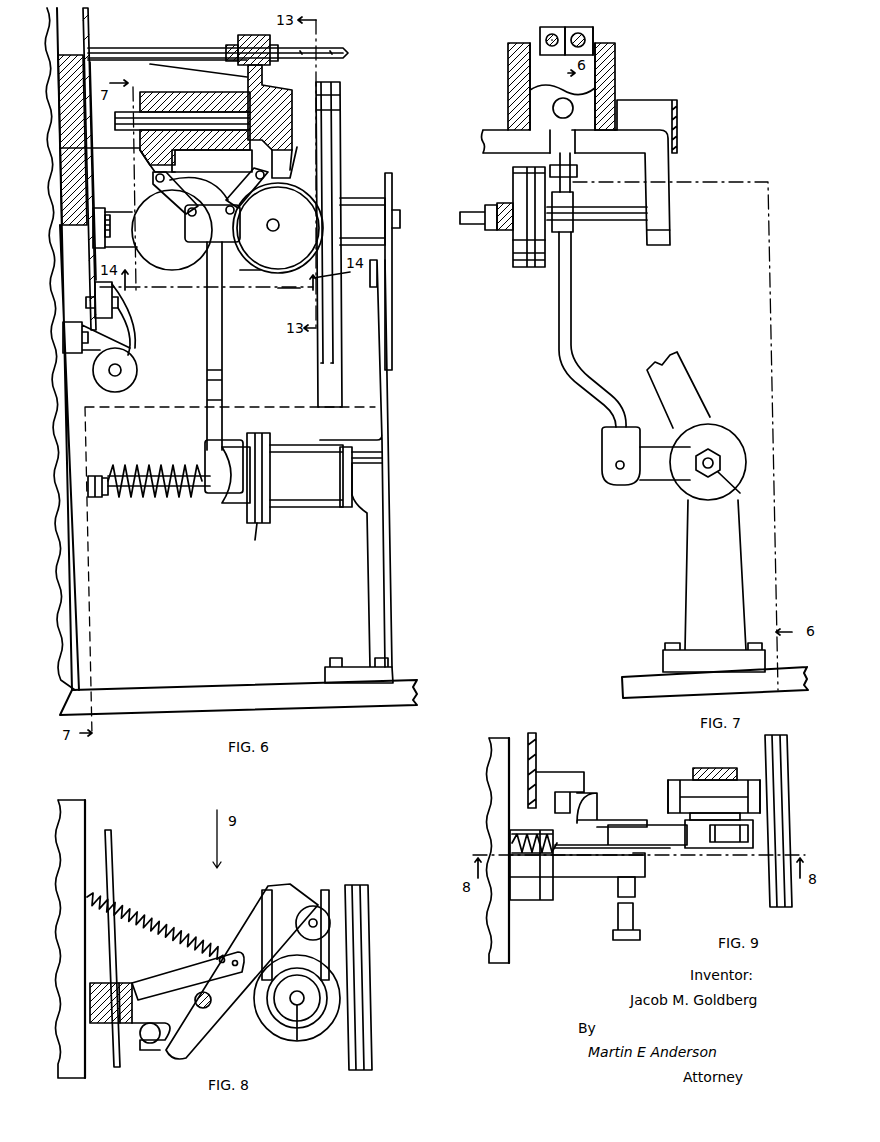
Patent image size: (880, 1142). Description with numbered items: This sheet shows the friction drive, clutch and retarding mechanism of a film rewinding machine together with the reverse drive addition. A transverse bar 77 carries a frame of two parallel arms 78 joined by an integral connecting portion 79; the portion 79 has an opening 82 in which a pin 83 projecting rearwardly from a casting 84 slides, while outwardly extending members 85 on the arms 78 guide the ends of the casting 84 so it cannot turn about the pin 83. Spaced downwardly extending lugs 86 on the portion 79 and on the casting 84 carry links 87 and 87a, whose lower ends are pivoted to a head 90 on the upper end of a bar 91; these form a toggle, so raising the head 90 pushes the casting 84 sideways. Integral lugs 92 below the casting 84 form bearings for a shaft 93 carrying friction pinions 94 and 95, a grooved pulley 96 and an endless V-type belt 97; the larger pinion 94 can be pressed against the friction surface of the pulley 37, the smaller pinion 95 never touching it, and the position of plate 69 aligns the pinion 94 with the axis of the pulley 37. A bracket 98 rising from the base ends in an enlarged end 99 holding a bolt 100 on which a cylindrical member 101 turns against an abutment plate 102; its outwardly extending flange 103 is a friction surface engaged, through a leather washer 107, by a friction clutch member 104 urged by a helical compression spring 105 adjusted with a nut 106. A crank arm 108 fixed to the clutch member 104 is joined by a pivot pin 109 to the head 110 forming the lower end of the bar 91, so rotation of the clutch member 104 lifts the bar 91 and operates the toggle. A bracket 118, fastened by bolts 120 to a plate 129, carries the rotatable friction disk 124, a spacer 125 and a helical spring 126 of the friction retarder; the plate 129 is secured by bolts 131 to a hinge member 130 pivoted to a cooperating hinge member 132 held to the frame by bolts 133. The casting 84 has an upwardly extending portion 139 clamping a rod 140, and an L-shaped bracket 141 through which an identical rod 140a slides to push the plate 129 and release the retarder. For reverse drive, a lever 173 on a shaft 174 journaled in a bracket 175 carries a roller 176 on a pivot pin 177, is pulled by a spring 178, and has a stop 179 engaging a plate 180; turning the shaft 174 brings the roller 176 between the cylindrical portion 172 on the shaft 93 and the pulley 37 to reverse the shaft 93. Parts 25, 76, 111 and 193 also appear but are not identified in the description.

In FIG. 6, the guide rail 25 is at (322, 385).
In FIG. 6, the pulley 37 is at (342, 122).
In FIG. 8, the pulley 37 is at (372, 942).
In FIG. 9, the pulley 37 is at (770, 888).
In FIG. 6, the plate 69 is at (393, 258).
In FIG. 6, the hub nut 76 is at (402, 218).
In FIG. 6, the transverse bar 77 is at (66, 60).
In FIG. 6, the parallel arms 78 is at (195, 92).
In FIG. 7, the parallel arms 78 is at (508, 78).
In FIG. 6, the connecting portion 79 is at (215, 95).
In FIG. 7, the connecting portion 79 is at (556, 88).
In FIG. 6, the opening 82 is at (145, 155).
In FIG. 6, the pin 83 is at (118, 117).
In FIG. 7, the pin 83 is at (573, 105).
In FIG. 6, the casting 84 is at (275, 92).
In FIG. 7, the outwardly extending members 85 is at (580, 126).
In FIG. 6, the downwardly extending lugs 86 is at (172, 165).
In FIG. 6, the link 87 is at (172, 198).
In FIG. 6, the link 87a is at (248, 190).
In FIG. 6, the head 90 is at (212, 223).
In FIG. 7, the head 90 is at (575, 216).
In FIG. 6, the bar 91 is at (222, 300).
In FIG. 7, the bar 91 is at (572, 278).
In FIG. 6, the integral lugs 92 is at (305, 160).
In FIG. 7, the integral lugs 92 is at (668, 172).
In FIG. 9, the integral lugs 92 is at (693, 778).
In FIG. 6, the shaft 93 is at (279, 225).
In FIG. 8, the shaft 93 is at (304, 985).
In FIG. 6, the friction pinion 94 is at (289, 295).
In FIG. 6, the friction pinion 95 is at (250, 273).
In FIG. 9, the friction pinion 95 is at (758, 778).
In FIG. 9, the grooved pulley 96 is at (740, 817).
In FIG. 8, the endless V-type belt 97 is at (325, 995).
In FIG. 9, the endless V-type belt 97 is at (745, 800).
In FIG. 6, the bracket 98 is at (378, 573).
In FIG. 7, the bracket 98 is at (714, 586).
In FIG. 6, the enlarged end 99 is at (375, 480).
In FIG. 6, the bolt 100 is at (107, 497).
In FIG. 7, the bolt 100 is at (712, 460).
In FIG. 6, the cylindrical member 101 is at (315, 510).
In FIG. 6, the abutment plate 102 is at (348, 510).
In FIG. 6, the outwardly extending flange 103 is at (266, 525).
In FIG. 6, the friction clutch member 104 is at (240, 495).
In FIG. 7, the friction clutch member 104 is at (738, 450).
In FIG. 6, the helical compression spring 105 is at (175, 500).
In FIG. 6, the nut 106 is at (118, 468).
In FIG. 7, the nut 106 is at (748, 487).
In FIG. 6, the leather washer 107 is at (243, 538).
In FIG. 7, the crank arm 108 is at (672, 485).
In FIG. 7, the pivot pin 109 is at (616, 467).
In FIG. 6, the head 110 is at (205, 445).
In FIG. 7, the head 110 is at (602, 447).
In FIG. 6, the support arm 111 is at (385, 400).
In FIG. 7, the support arm 111 is at (678, 390).
In FIG. 6, the bracket 118 is at (122, 227).
In FIG. 7, the bracket 118 is at (500, 200).
In FIG. 6, the bolts 120 is at (100, 205).
In FIG. 6, the friction disk 124 is at (158, 230).
In FIG. 7, the friction disk 124 is at (546, 262).
In FIG. 7, the spacer 125 is at (513, 250).
In FIG. 7, the helical spring 126 is at (480, 205).
In FIG. 6, the plate 129 is at (89, 37).
In FIG. 8, the plate 129 is at (112, 835).
In FIG. 6, the hinge member 130 is at (144, 319).
In FIG. 6, the bolts 131 is at (118, 303).
In FIG. 6, the cooperating hinge member 132 is at (125, 372).
In FIG. 6, the bolts 133 is at (90, 340).
In FIG. 7, the upwardly extending portion 139 is at (595, 40).
In FIG. 7, the rod 140 is at (582, 28).
In FIG. 7, the rod 140a is at (551, 33).
In FIG. 7, the L-shaped bracket 141 is at (540, 34).
In FIG. 8, the cylindrical portion 172 is at (297, 1040).
In FIG. 8, the lever 173 is at (252, 938).
In FIG. 9, the lever 173 is at (621, 836).
In FIG. 8, the shaft 174 is at (208, 1008).
In FIG. 9, the shaft 174 is at (640, 915).
In FIG. 9, the bracket 175 is at (577, 865).
In FIG. 8, the roller 176 is at (305, 893).
In FIG. 9, the roller 176 is at (745, 850).
In FIG. 8, the pivot pin 177 is at (320, 923).
In FIG. 8, the spring 178 is at (95, 895).
In FIG. 8, the stop 179 is at (188, 976).
In FIG. 8, the plate 180 is at (132, 1005).
In FIG. 9, the pulley pad 193 is at (715, 768).